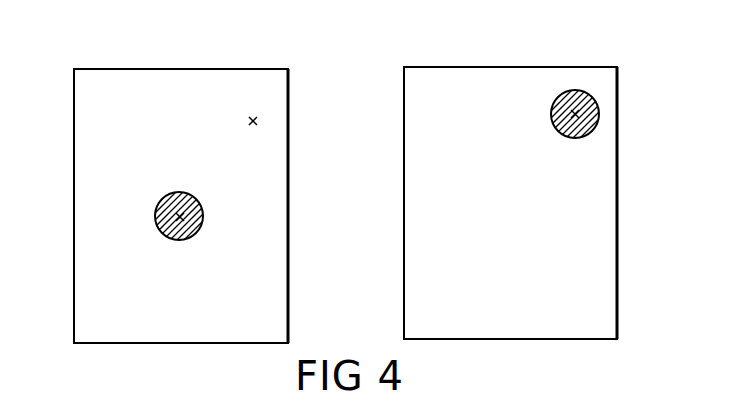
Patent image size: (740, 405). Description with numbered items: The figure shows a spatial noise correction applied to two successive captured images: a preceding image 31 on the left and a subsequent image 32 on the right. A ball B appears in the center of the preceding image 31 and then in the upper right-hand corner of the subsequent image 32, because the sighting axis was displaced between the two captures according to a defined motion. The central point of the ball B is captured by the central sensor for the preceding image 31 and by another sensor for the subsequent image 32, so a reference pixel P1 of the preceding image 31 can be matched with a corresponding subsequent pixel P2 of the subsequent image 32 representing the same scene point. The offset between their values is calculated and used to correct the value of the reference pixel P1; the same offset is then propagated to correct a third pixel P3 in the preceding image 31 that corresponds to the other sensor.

The preceding image 31 is at (70, 285).
The subsequent image 32 is at (617, 302).
The ball B is at (200, 211).
The reference pixel P1 is at (182, 218).
The subsequent pixel P2 is at (577, 113).
The third pixel P3 is at (256, 119).